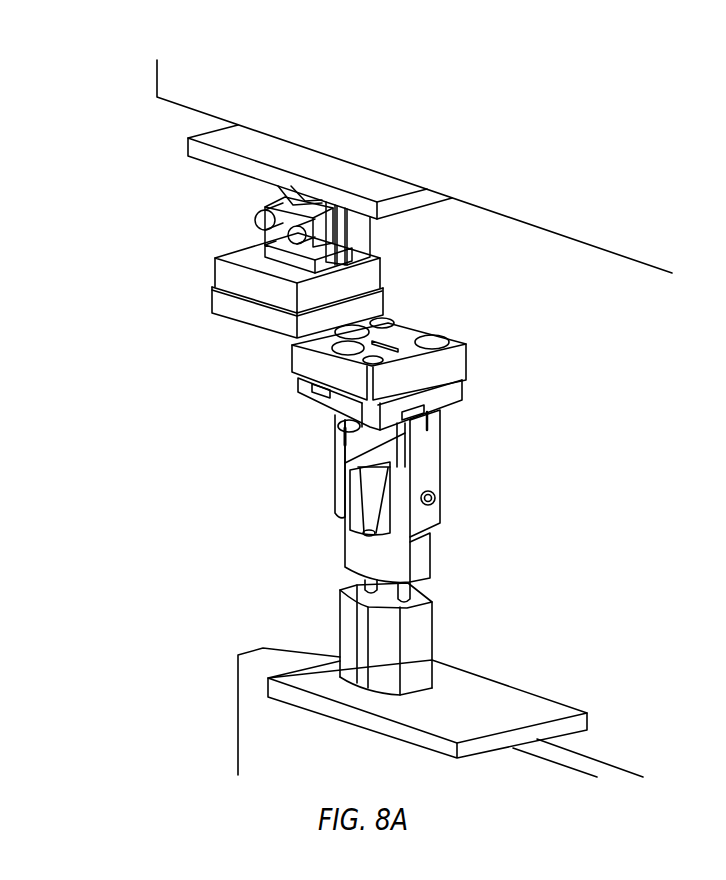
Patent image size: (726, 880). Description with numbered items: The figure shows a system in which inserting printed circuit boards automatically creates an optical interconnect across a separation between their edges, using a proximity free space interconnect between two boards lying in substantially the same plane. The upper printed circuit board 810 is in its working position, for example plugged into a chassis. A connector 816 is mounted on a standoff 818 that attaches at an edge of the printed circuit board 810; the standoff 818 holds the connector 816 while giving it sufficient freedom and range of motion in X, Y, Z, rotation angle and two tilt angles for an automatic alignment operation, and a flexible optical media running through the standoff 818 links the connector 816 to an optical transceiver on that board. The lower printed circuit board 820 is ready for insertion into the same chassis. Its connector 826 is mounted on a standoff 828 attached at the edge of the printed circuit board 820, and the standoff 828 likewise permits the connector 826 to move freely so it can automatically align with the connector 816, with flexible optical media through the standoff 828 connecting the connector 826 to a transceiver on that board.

The printed circuit board 810 is at (601, 221).
The connector 816 is at (212, 292).
The standoff 818 is at (350, 235).
The printed circuit board 820 is at (289, 748).
The connector 826 is at (450, 363).
The standoff 828 is at (433, 477).